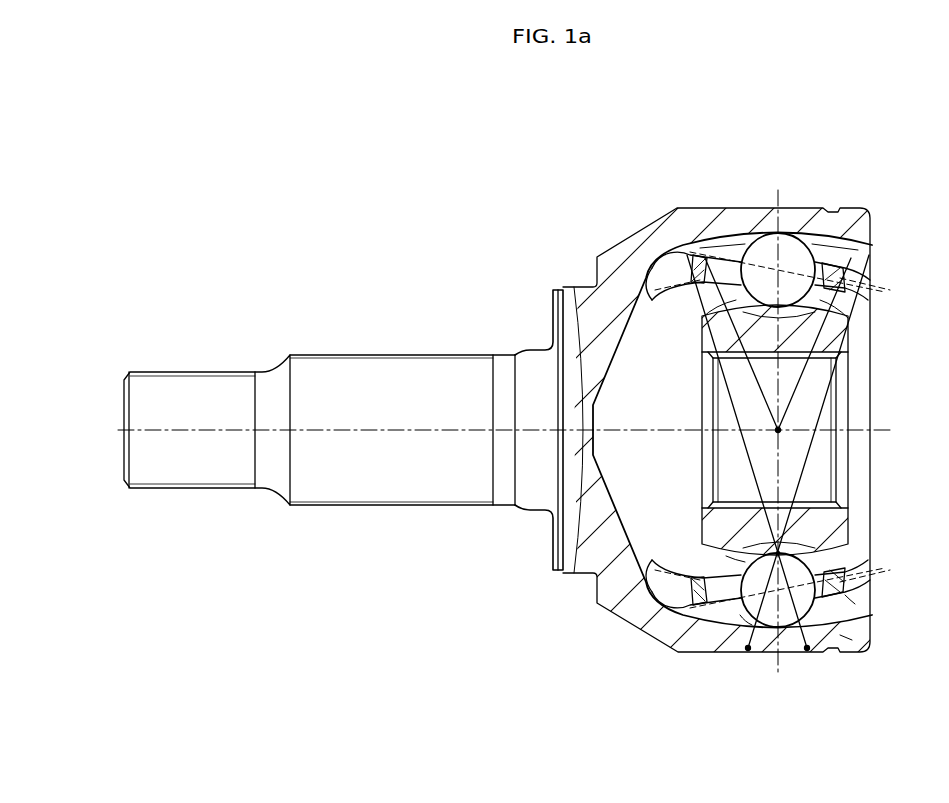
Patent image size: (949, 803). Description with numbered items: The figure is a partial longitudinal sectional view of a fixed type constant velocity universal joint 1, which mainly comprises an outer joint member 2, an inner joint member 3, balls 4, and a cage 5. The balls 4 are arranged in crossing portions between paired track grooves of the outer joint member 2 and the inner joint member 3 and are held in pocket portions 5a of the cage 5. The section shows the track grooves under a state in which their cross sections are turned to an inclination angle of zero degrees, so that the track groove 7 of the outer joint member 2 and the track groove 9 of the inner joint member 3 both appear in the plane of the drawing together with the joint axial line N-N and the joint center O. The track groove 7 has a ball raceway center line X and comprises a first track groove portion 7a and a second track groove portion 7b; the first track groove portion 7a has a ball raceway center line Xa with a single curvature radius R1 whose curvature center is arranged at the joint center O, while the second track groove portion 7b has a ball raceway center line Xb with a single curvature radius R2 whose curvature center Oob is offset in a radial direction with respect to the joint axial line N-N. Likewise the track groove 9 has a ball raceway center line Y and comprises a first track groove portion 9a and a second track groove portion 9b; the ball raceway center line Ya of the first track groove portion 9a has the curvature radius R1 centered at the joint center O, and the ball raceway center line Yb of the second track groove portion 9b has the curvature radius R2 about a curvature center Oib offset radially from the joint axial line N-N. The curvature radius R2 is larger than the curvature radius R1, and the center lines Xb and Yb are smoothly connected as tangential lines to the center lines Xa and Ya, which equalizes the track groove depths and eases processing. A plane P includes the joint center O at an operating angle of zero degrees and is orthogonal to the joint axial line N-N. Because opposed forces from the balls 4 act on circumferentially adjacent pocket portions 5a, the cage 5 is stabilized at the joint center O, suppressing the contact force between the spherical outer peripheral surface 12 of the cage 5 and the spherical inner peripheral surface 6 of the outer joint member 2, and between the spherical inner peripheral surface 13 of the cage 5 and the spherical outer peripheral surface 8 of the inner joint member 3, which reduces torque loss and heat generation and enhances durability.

The constant velocity universal joint 1 is at (529, 421).
The outer joint member 2 is at (803, 210).
The inner joint member 3 is at (850, 520).
The balls 4 is at (762, 243).
The cage 5 is at (818, 588).
The pocket portions 5a is at (745, 615).
The spherical inner peripheral surface 6 is at (848, 602).
The track groove 7 is at (838, 256).
The first track groove portion 7a is at (718, 258).
The second track groove portion 7b is at (848, 262).
The spherical outer peripheral surface 8 is at (730, 560).
The track groove 9 is at (703, 353).
The first track groove portion 9a is at (852, 320).
The second track groove portion 9b is at (702, 315).
The spherical outer peripheral surface 12 is at (846, 638).
The spherical inner peripheral surface 13 is at (693, 563).
The joint axial line N is at (501, 430).
The joint center O is at (767, 432).
The plane P is at (782, 662).
The curvature center Oob is at (755, 655).
The curvature center Oib is at (812, 655).
The curvature radius R1 is at (812, 382).
The curvature radius R2 is at (850, 463).
The ball raceway center line X is at (862, 252).
The ball raceway center line Y is at (866, 266).
The ball raceway center line Xa is at (650, 280).
The ball raceway center line Xb is at (880, 286).
The ball raceway center line Ya is at (870, 292).
The ball raceway center line Yb is at (690, 250).